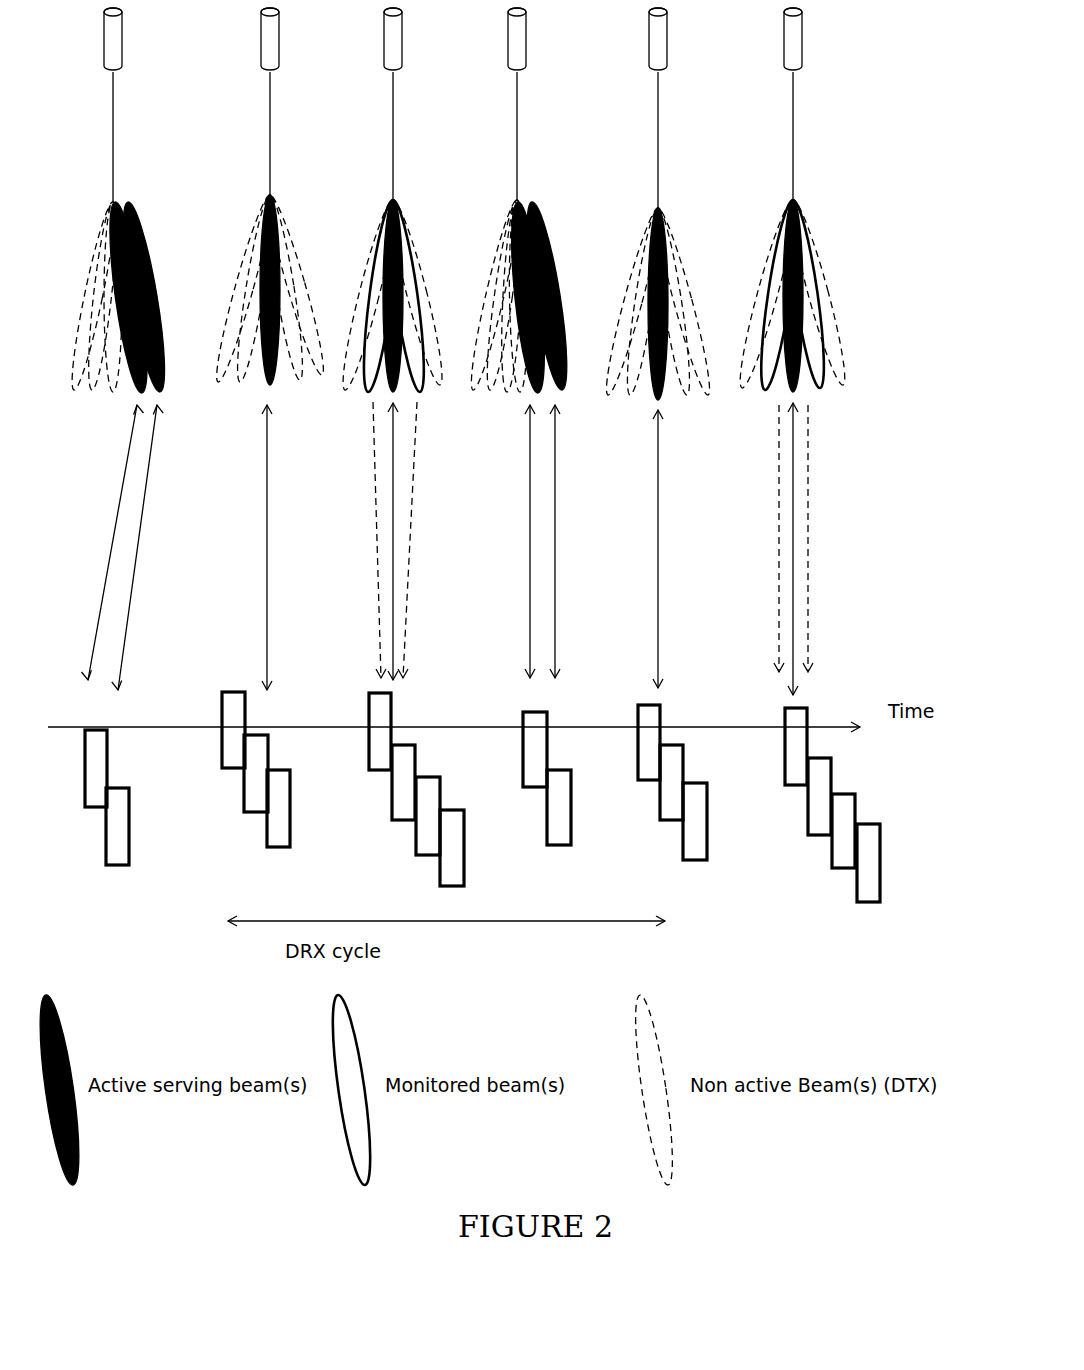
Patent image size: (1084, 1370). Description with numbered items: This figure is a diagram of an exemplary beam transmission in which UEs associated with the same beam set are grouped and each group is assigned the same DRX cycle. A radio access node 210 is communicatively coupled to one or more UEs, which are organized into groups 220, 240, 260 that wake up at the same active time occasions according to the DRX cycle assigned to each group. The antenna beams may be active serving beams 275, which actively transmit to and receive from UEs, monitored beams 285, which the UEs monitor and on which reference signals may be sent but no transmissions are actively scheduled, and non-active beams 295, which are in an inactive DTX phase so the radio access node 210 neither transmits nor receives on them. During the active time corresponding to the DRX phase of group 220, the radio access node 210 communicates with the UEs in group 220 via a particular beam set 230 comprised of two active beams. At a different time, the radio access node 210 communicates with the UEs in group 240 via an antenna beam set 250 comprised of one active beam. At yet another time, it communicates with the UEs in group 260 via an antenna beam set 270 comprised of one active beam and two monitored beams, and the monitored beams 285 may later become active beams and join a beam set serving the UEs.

The radio access node 210 is at (502, 36).
The beam set 230 is at (346, 274).
The antenna beam set 250 is at (487, 274).
The antenna beam set 270 is at (619, 275).
The UE group 220 is at (369, 797).
The UE group 240 is at (506, 789).
The UE group 260 is at (668, 797).
The active serving beam 275 is at (96, 1090).
The monitored beam 285 is at (389, 1090).
The non-active beam 295 is at (696, 1089).